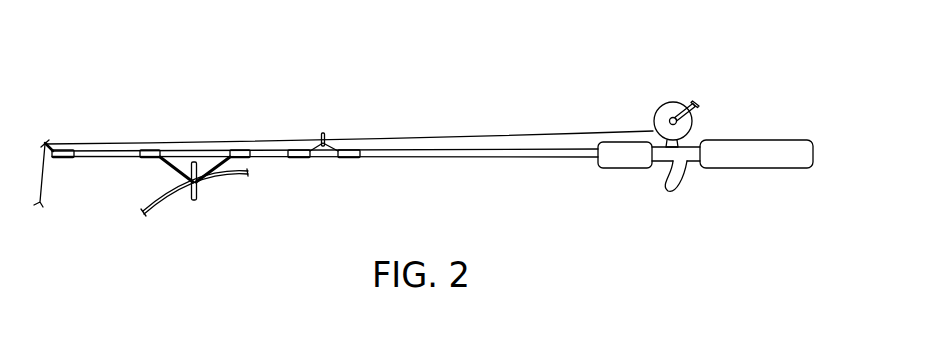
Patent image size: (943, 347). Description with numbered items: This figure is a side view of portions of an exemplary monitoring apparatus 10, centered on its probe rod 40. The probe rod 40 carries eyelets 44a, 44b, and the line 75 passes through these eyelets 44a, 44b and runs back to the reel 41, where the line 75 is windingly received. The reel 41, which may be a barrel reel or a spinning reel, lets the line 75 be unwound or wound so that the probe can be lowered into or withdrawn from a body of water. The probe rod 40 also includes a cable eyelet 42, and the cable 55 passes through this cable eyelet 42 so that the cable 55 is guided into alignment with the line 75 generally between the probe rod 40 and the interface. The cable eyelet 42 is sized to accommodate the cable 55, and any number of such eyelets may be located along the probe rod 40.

The monitoring apparatus 10 is at (773, 52).
The probe rod 40 is at (548, 157).
The reel 41 is at (668, 107).
The cable eyelet 42 is at (200, 187).
The eyelet 44a is at (47, 140).
The eyelet 44b is at (325, 135).
The cable 55 is at (163, 205).
The line 75 is at (445, 135).